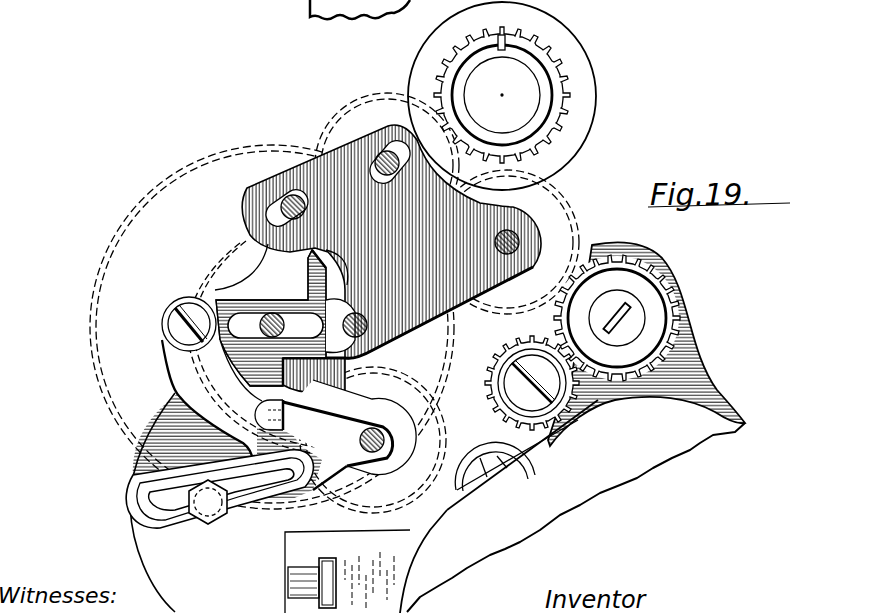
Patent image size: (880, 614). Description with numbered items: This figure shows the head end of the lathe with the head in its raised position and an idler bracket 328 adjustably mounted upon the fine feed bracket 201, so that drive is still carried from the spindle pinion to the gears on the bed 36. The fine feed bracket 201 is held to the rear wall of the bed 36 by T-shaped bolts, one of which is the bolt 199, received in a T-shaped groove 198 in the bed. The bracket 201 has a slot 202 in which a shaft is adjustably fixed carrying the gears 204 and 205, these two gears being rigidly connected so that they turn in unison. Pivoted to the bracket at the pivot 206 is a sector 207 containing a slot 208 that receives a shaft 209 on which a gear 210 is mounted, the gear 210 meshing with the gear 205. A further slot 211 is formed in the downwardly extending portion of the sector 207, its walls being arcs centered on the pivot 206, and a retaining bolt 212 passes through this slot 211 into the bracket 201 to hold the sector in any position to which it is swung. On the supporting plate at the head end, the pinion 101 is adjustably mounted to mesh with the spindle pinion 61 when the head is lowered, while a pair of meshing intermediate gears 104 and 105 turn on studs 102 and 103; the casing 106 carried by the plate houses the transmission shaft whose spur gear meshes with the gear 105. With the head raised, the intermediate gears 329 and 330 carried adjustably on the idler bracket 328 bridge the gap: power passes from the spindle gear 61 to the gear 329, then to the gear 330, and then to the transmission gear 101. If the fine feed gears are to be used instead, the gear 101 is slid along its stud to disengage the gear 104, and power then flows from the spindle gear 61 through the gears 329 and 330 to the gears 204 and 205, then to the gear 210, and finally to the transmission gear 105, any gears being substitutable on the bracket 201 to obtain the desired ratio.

The bed 36 is at (404, 565).
The spindle gear 61 is at (556, 70).
The pinion 101 is at (671, 311).
The stud 102 is at (526, 358).
The stud 103 is at (493, 462).
The intermediate gear 104 is at (497, 391).
The intermediate gear 105 is at (537, 451).
The casing 106 is at (570, 510).
The T-shaped groove 198 is at (323, 574).
The T-shaped bolt 199 is at (326, 580).
The fine feed bracket 201 is at (137, 460).
The slot 202 is at (303, 323).
The gear 204 is at (121, 389).
The gear 205 is at (203, 284).
The pivot 206 is at (181, 330).
The sector 207 is at (264, 361).
The slot 208 is at (343, 430).
The shaft 209 is at (378, 452).
The gear 210 is at (321, 490).
The slot 211 is at (163, 508).
The retaining bolt 212 is at (208, 520).
The idler bracket 328 is at (300, 167).
The intermediate gear 329 is at (379, 104).
The intermediate gear 330 is at (574, 211).